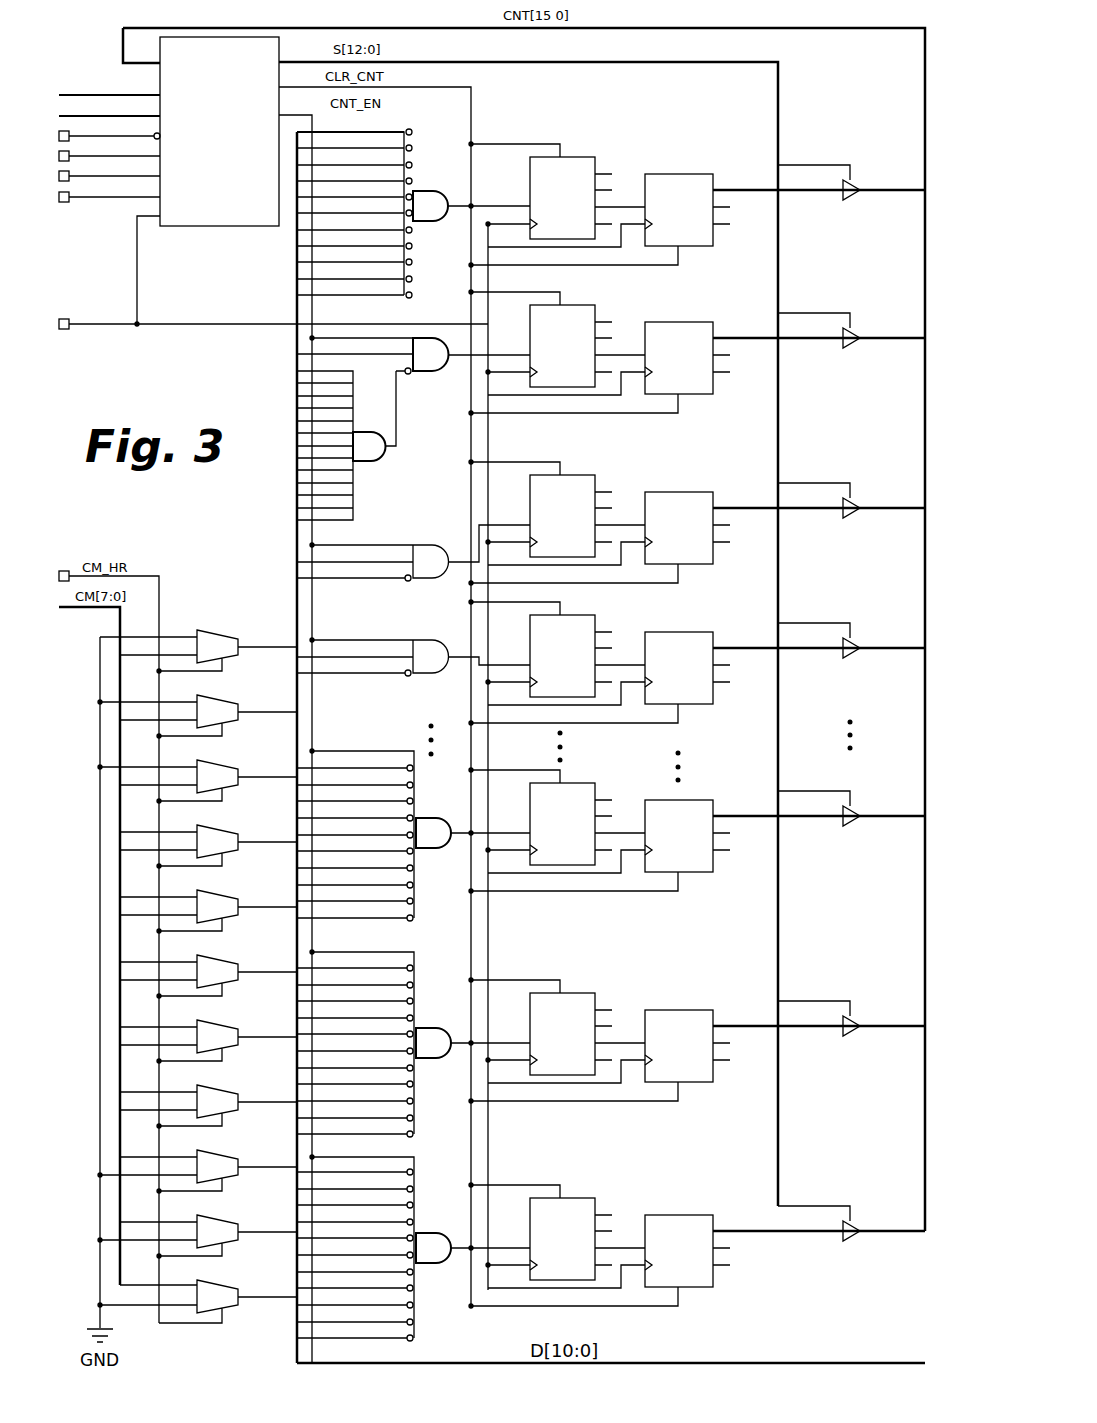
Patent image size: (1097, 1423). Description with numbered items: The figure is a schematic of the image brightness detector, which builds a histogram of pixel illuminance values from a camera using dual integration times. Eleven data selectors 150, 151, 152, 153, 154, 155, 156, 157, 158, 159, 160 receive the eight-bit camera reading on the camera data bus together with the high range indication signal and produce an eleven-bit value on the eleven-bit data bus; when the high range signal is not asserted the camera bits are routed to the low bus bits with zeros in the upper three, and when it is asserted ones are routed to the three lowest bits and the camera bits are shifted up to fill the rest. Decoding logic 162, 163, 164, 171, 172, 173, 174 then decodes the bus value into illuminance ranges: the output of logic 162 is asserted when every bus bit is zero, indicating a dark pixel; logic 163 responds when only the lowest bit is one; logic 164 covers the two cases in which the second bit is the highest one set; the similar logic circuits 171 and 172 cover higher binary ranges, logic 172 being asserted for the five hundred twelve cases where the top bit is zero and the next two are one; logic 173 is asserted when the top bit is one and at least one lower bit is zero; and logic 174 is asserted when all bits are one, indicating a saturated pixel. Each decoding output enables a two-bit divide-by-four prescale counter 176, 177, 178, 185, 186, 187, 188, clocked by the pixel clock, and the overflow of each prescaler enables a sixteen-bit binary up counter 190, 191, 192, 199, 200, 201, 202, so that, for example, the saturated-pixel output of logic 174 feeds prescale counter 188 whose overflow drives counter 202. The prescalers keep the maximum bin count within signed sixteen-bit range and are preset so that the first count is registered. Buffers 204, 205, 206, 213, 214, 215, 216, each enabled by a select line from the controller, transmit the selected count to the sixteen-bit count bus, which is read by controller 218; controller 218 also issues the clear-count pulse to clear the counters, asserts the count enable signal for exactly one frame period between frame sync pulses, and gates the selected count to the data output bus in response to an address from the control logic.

The data selector 150 is at (226, 1306).
The data selector 151 is at (226, 1241).
The data selector 152 is at (226, 1176).
The data selector 153 is at (226, 1111).
The data selector 154 is at (226, 1046).
The data selector 155 is at (226, 981).
The data selector 156 is at (226, 916).
The data selector 157 is at (226, 851).
The data selector 158 is at (226, 786).
The data selector 159 is at (226, 721).
The data selector 160 is at (226, 656).
The logic 162 is at (430, 1265).
The logic 163 is at (430, 1060).
The logic 164 is at (430, 850).
The logic circuit 171 is at (425, 640).
The logic circuit 172 is at (425, 545).
The logic 173 is at (412, 439).
The logic 174 is at (430, 224).
The prescale counter 176 is at (557, 1231).
The prescale counter 177 is at (557, 1026).
The prescale counter 178 is at (557, 816).
The prescale counter 185 is at (557, 648).
The prescale counter 186 is at (557, 508).
The prescale counter 187 is at (557, 338).
The prescale counter 188 is at (557, 190).
The counter 190 is at (697, 1278).
The counter 191 is at (697, 1073).
The counter 192 is at (697, 863).
The counter 199 is at (697, 695).
The counter 200 is at (697, 555).
The counter 201 is at (697, 385).
The 16-bit binary up counter 202 is at (697, 237).
The buffer 204 is at (842, 1250).
The buffer 205 is at (842, 1045).
The buffer 206 is at (842, 835).
The buffer 213 is at (842, 667).
The buffer 214 is at (842, 527).
The buffer 215 is at (842, 357).
The buffer 216 is at (842, 209).
The controller 218 is at (193, 228).